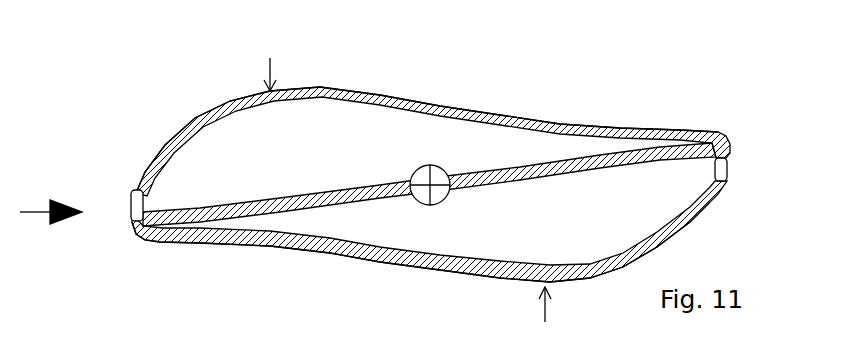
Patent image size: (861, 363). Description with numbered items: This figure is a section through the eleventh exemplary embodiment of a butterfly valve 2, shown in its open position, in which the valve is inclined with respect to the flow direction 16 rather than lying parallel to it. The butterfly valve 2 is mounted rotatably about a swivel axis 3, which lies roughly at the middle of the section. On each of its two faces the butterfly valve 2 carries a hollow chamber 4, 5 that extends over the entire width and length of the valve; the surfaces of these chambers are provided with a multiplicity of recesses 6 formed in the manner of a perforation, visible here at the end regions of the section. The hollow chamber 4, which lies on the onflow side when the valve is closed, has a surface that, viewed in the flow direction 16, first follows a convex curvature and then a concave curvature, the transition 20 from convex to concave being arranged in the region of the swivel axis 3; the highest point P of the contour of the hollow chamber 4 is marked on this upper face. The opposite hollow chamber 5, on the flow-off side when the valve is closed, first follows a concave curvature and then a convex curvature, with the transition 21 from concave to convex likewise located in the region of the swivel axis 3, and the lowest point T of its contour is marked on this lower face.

The butterfly valve 2 is at (497, 172).
The swivel axis 3 is at (415, 168).
The hollow chamber 4 is at (577, 120).
The hollow chamber 5 is at (303, 228).
The recesses 6 is at (133, 213).
The flow direction 16 is at (27, 212).
The transition 20 is at (362, 92).
The transition 21 is at (410, 268).
The highest point P is at (272, 55).
The lowest point T is at (543, 321).